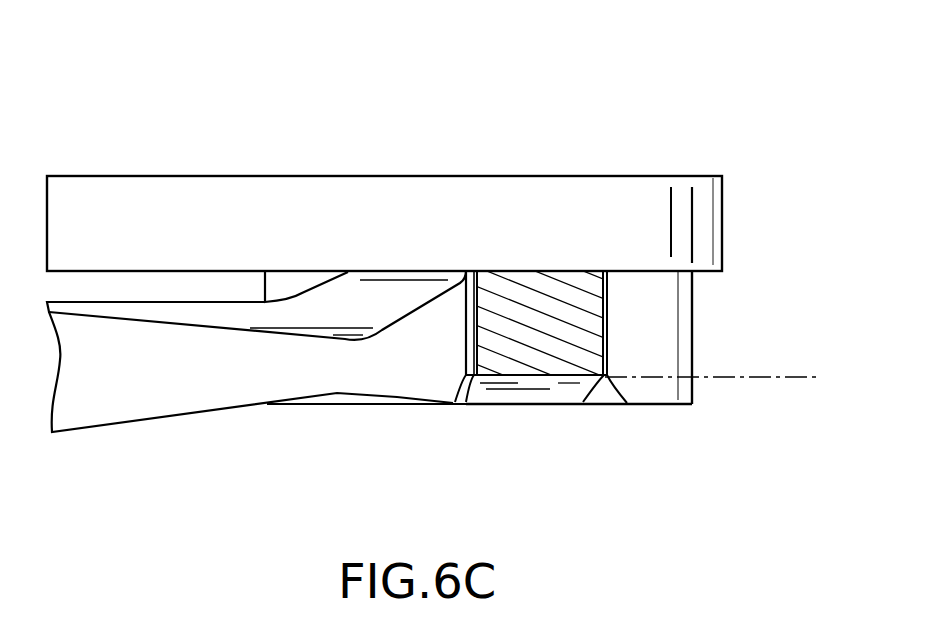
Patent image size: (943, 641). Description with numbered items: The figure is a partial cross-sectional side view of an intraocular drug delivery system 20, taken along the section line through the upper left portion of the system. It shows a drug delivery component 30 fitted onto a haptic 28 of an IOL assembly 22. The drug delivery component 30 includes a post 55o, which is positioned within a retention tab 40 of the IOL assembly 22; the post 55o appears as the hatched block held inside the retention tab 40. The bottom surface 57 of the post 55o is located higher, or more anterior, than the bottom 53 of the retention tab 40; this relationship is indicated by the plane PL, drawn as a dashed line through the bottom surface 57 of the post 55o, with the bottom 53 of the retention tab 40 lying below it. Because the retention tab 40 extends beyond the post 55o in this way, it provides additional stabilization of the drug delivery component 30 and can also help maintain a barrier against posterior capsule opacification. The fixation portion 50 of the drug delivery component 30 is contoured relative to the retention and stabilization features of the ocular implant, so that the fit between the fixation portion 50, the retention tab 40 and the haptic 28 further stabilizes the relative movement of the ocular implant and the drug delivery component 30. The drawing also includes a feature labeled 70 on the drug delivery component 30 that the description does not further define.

The intraocular drug delivery system 20 is at (577, 98).
The IOL assembly 22 is at (163, 437).
The haptic 28 is at (682, 410).
The drug delivery component 30 is at (428, 159).
The retention tab 40 is at (637, 300).
The fixation portion 50 is at (533, 415).
The bottom of the retention tab 53 is at (652, 405).
The post 55o is at (588, 337).
The bottom surface of the post 57 is at (558, 376).
The retention feature 70 is at (642, 197).
The plane PL is at (730, 377).